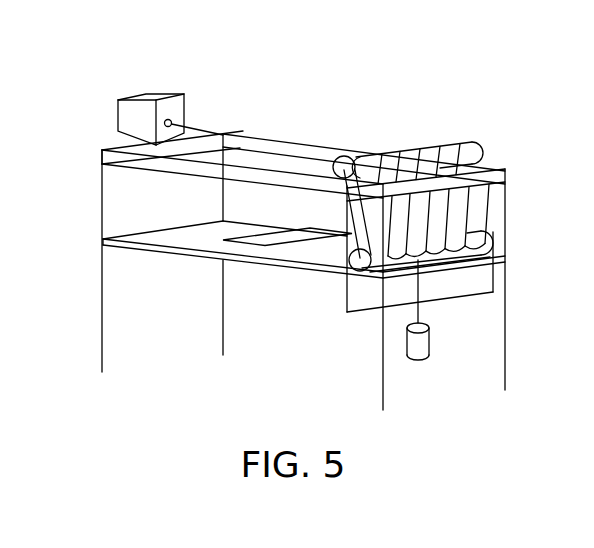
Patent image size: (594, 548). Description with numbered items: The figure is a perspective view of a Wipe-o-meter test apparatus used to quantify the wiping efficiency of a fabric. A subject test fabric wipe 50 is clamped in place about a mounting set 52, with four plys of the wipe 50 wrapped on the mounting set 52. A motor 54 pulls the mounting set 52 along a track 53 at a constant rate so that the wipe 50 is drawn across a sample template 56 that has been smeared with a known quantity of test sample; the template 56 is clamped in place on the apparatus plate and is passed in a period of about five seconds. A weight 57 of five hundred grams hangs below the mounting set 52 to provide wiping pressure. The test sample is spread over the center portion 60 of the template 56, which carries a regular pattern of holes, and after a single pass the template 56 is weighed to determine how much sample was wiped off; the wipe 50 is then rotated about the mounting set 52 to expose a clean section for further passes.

The test fabric wipe 50 is at (418, 155).
The mounting set 52 is at (497, 237).
The track 53 is at (255, 142).
The motor 54 is at (143, 94).
The sample template 56 is at (303, 232).
The weight 57 is at (430, 347).
The center portion 60 is at (150, 248).